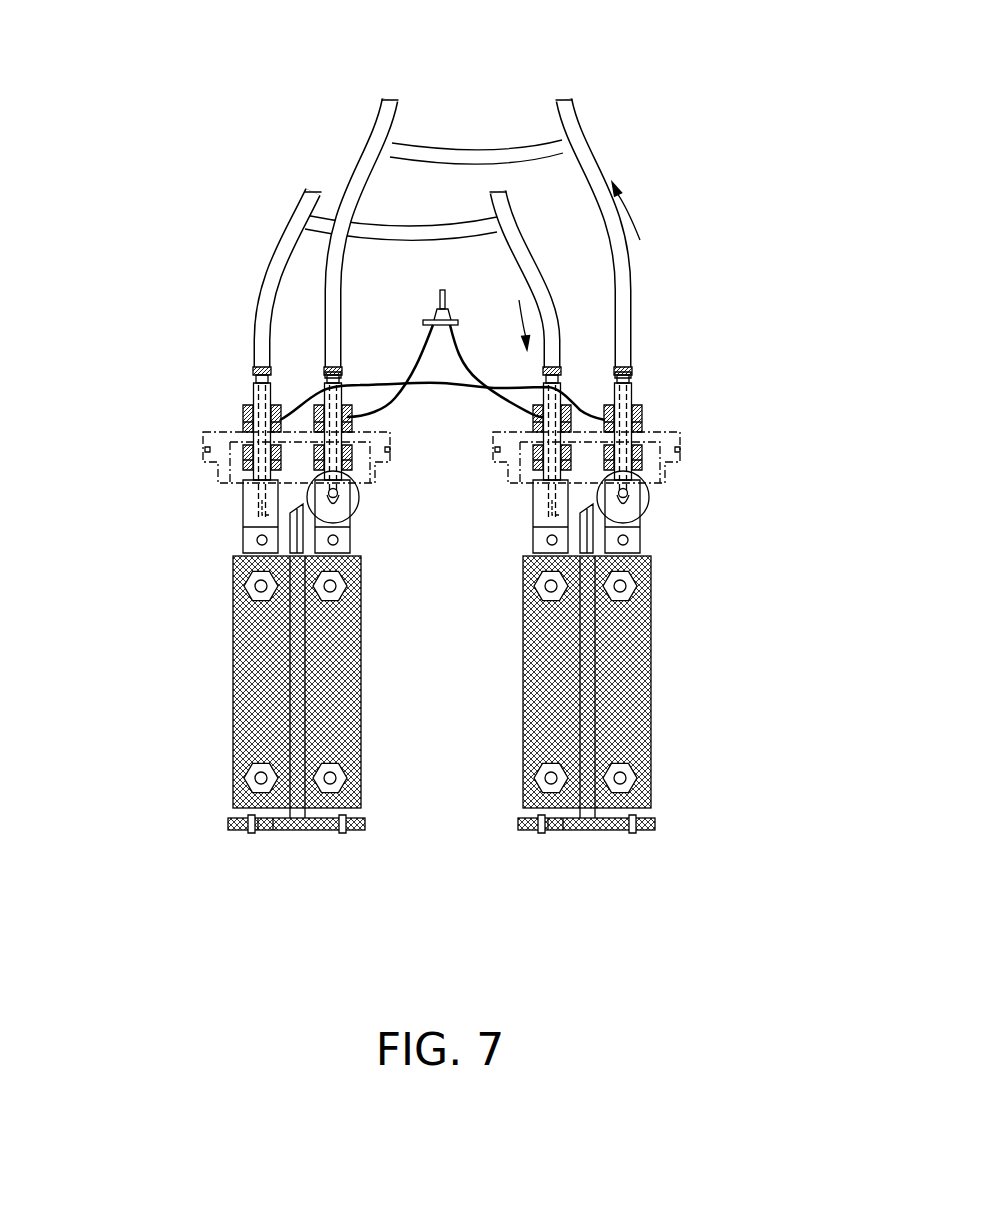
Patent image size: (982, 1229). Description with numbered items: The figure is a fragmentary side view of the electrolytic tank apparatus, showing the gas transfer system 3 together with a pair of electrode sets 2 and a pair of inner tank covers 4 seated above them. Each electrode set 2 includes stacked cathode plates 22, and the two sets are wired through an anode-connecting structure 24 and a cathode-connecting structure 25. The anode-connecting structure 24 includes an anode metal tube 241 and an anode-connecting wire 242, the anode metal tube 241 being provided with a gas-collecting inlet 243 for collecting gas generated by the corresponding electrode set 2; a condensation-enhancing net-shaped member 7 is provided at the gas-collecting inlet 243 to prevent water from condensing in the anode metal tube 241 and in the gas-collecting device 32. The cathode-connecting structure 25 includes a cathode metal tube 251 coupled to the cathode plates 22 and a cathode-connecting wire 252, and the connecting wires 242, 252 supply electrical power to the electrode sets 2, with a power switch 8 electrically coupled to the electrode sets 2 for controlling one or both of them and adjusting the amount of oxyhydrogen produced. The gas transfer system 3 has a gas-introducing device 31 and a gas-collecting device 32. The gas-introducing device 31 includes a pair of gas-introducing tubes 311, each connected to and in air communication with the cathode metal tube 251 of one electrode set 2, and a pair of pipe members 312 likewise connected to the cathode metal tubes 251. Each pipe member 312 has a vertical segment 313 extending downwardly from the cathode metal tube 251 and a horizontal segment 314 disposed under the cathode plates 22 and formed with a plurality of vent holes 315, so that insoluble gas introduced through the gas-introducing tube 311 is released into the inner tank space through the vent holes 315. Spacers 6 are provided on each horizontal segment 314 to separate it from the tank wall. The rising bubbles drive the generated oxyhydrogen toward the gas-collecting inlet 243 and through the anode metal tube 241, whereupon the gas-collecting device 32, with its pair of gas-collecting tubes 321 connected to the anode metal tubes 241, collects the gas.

The electrode set 2 is at (219, 605).
The gas transfer system 3 is at (266, 90).
The inner tank cover 4 is at (395, 433).
The spacer 6 is at (251, 833).
The condensation-enhancing net-shaped member 7 is at (355, 503).
The power switch 8 is at (432, 318).
The cathode plate 22 is at (253, 688).
The anode-connecting structure 24 is at (366, 546).
The cathode-connecting structure 25 is at (229, 540).
The gas-introducing device 31 is at (260, 187).
The gas-collecting device 32 is at (624, 102).
The anode metal tube 241 is at (313, 377).
The anode-connecting wire 242 is at (468, 360).
The gas-collecting inlet 243 is at (338, 493).
The cathode metal tube 251 is at (250, 392).
The cathode-connecting wire 252 is at (383, 385).
The gas-introducing tube 311 is at (290, 253).
The pipe member 312 is at (285, 513).
The vertical segment 313 is at (290, 714).
The horizontal segment 314 is at (365, 825).
The vent hole 315 is at (273, 830).
The gas-collecting tube 321 is at (372, 165).